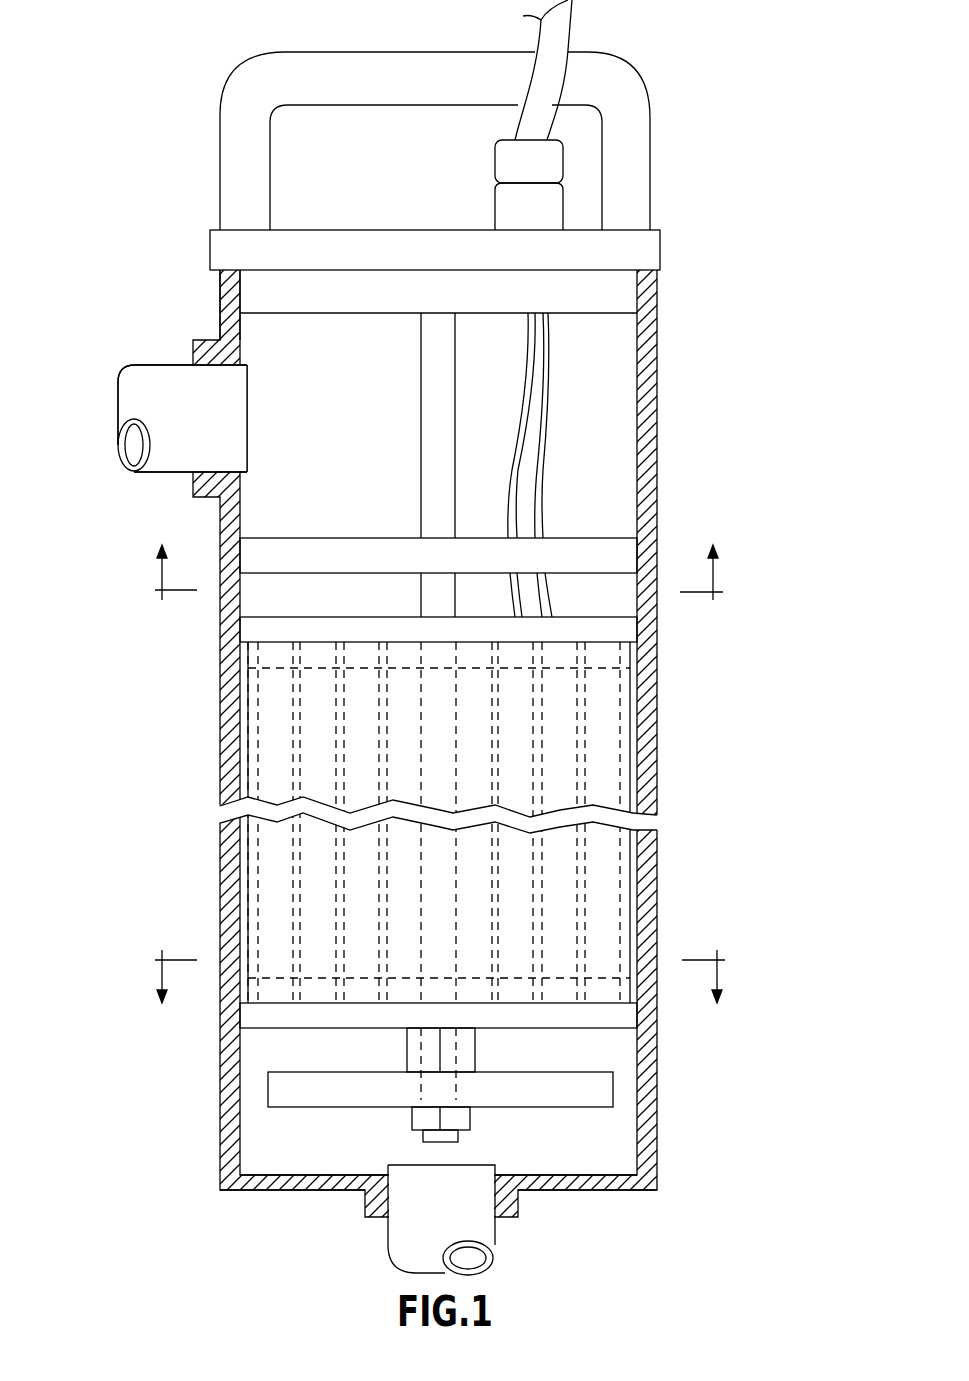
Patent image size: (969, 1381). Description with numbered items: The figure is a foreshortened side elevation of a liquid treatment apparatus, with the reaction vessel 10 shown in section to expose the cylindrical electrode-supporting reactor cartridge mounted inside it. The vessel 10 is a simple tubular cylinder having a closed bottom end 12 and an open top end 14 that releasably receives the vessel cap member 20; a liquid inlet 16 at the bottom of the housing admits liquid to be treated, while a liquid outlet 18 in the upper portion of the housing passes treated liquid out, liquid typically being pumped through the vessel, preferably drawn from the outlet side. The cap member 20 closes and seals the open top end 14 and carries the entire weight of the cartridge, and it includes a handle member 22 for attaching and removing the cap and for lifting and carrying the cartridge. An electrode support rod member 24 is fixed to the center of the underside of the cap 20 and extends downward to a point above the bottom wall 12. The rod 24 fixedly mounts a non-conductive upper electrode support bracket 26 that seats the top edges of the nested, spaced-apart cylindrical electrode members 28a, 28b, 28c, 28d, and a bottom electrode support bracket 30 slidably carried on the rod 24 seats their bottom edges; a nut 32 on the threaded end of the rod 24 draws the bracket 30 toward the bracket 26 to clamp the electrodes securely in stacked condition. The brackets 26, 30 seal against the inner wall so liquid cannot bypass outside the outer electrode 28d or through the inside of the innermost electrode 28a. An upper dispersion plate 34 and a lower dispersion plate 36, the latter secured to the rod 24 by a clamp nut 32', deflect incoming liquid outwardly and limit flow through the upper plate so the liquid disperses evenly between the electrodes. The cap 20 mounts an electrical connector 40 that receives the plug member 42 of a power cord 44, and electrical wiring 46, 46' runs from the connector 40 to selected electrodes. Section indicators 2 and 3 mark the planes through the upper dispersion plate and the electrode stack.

The reaction vessel 10 is at (657, 765).
The closed bottom end 12 is at (290, 1195).
The open top end 14 is at (220, 283).
The liquid inlet 16 is at (495, 1241).
The liquid outlet 18 is at (125, 395).
The vessel cap member 20 is at (343, 240).
The handle member 22 is at (435, 55).
The electrode support rod member 24 is at (420, 398).
The upper electrode support bracket 26 is at (583, 628).
The cylindrical electrode member 28a is at (375, 958).
The cylindrical electrode member 28b is at (340, 685).
The cylindrical electrode member 28c is at (290, 958).
The cylindrical electrode member 28d is at (262, 680).
The bottom electrode support bracket 30 is at (555, 1022).
The nut 32 is at (475, 1050).
The clamp nut 32' is at (402, 1125).
The upper dispersion plate 34 is at (297, 545).
The lower dispersion plate 36 is at (300, 1107).
The electrical connector 40 is at (495, 212).
The plug member 42 is at (495, 160).
The power cord 44 is at (572, 25).
The electrical wiring 46 is at (497, 465).
The electrical wiring 46' is at (578, 465).
The section line 2- 2 is at (438, 575).
The section line 3- 3 is at (439, 974).